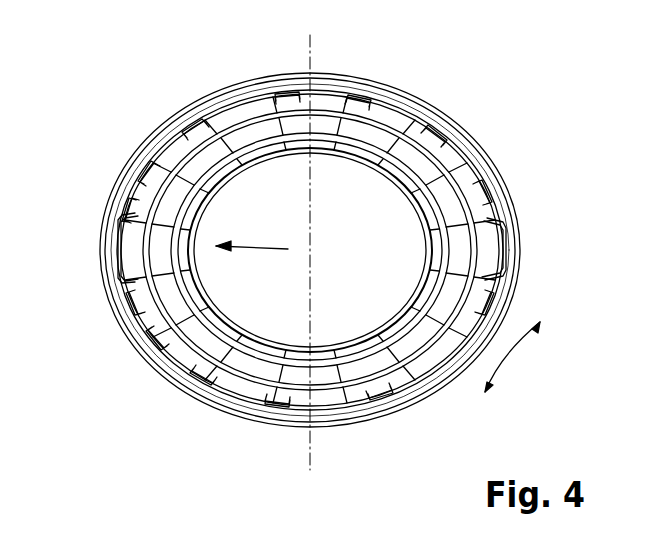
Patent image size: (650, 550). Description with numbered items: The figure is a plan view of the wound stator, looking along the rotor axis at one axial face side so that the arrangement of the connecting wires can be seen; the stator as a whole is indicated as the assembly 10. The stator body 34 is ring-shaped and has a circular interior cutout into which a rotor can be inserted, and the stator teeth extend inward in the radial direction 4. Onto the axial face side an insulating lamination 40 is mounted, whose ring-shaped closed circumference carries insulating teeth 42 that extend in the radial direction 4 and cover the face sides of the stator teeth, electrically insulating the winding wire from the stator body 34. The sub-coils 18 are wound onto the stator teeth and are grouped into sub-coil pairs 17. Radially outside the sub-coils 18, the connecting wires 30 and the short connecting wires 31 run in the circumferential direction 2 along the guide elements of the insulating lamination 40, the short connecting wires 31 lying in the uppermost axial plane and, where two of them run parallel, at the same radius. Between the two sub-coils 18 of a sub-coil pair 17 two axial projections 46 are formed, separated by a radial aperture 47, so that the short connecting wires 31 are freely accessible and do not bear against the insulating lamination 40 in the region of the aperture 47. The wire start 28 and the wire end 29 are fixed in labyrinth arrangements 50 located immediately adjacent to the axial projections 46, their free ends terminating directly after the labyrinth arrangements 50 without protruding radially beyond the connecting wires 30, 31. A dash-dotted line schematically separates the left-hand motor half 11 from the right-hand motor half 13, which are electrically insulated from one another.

The clutch disc / damper assembly 10 is at (524, 68).
The left-hand motor half 11 is at (118, 159).
The right-hand motor half 13 is at (504, 160).
The stator body 34 is at (521, 252).
The sub-coil 18 is at (410, 183).
The sub-coil pair 17 is at (450, 283).
The insulating tooth 42 is at (277, 150).
The insulating lamination 40 is at (322, 98).
The wire start 28 is at (360, 102).
The wire end 29 is at (445, 137).
The short connecting wire 31 is at (215, 110).
The connecting wire 30 is at (163, 133).
The radial aperture 47 is at (407, 383).
The axial projection 46 is at (165, 362).
The labyrinth arrangement 50 is at (216, 412).
The radial direction 4 is at (258, 250).
The circumferential direction 2 is at (522, 362).